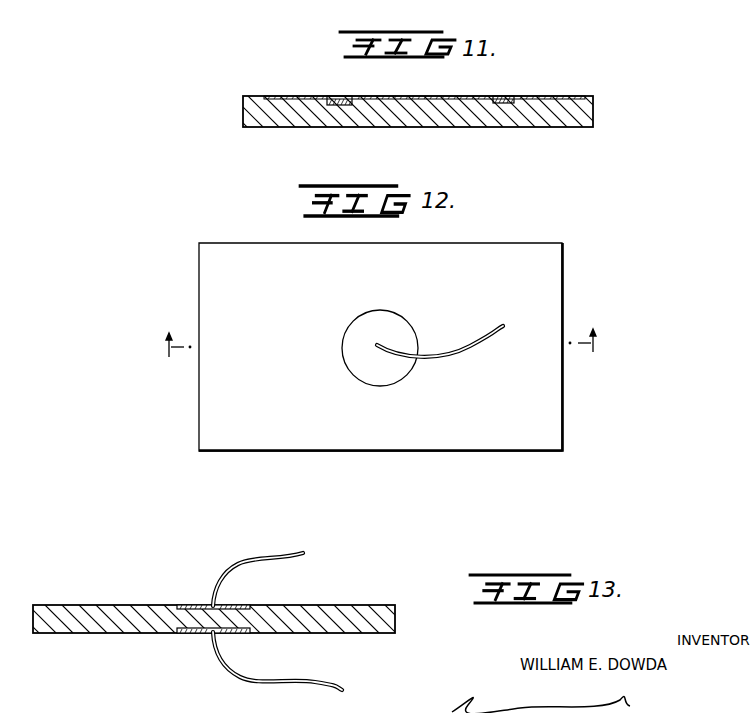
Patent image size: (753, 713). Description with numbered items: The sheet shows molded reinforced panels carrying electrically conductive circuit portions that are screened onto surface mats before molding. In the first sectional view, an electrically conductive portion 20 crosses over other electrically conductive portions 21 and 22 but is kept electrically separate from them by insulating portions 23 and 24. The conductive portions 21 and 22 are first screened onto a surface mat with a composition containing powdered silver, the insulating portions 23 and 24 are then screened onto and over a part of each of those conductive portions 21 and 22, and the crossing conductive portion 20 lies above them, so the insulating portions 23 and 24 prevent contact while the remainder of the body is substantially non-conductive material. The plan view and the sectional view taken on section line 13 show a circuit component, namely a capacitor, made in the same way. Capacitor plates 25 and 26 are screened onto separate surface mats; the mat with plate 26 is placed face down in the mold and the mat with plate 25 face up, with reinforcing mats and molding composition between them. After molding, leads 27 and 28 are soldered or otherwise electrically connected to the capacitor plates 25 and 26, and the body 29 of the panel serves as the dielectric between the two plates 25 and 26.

In FIG. 11, the electrically conductive portion 20 is at (560, 99).
In FIG. 11, the electrically conductive portion 21 is at (326, 96).
In FIG. 11, the electrically conductive portion 22 is at (494, 98).
In FIG. 11, the insulating portion 23 is at (349, 98).
In FIG. 11, the insulating portion 24 is at (514, 99).
In FIG. 12, the capacitor plate 25 is at (399, 325).
In FIG. 13, the capacitor plate 25 is at (237, 607).
In FIG. 13, the capacitor plate 26 is at (243, 634).
In FIG. 12, the lead 27 is at (483, 333).
In FIG. 13, the lead 27 is at (258, 558).
In FIG. 13, the lead 28 is at (228, 668).
In FIG. 12, the body of the panel 29 is at (494, 254).
In FIG. 13, the body of the panel 29 is at (176, 620).
In FIG. 12, the section line 13- 13 is at (384, 347).